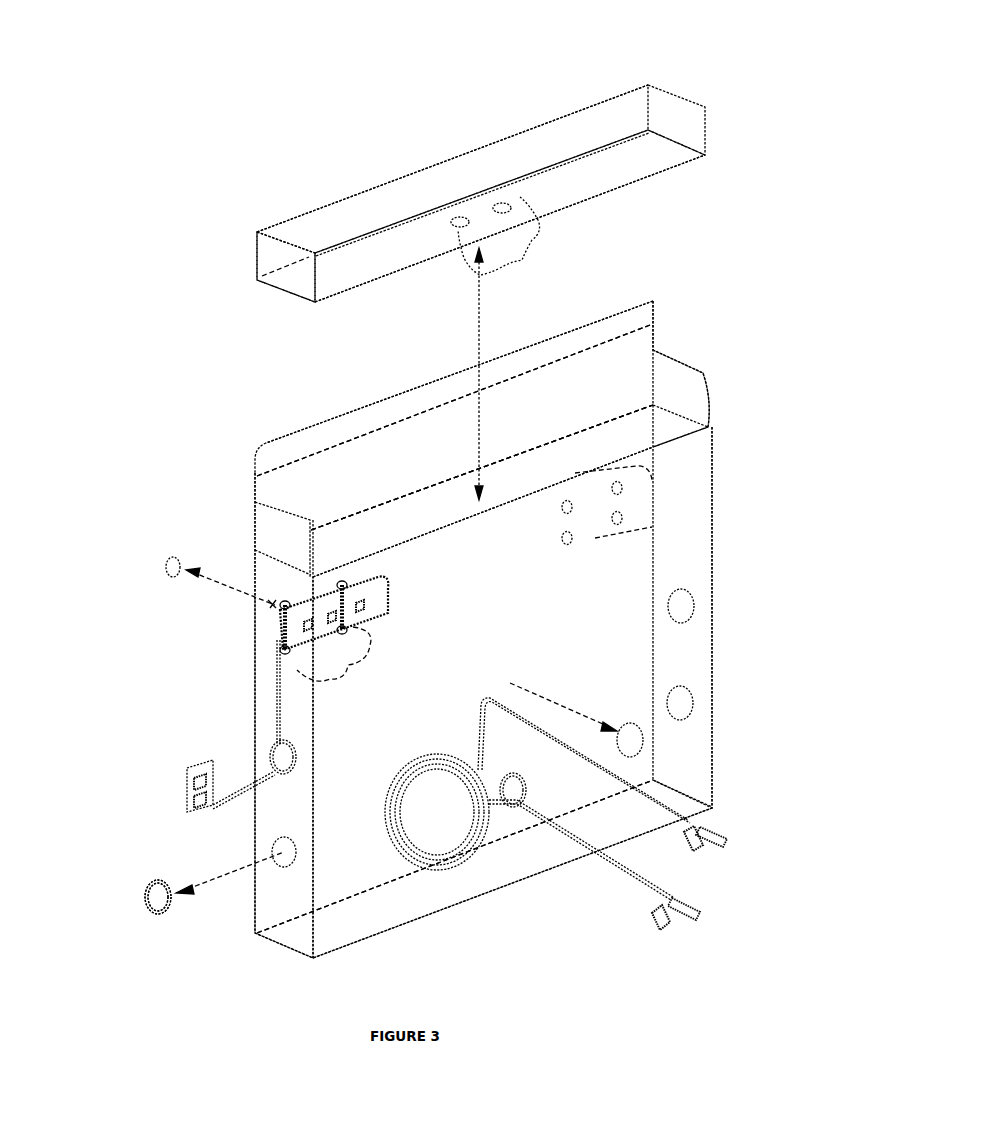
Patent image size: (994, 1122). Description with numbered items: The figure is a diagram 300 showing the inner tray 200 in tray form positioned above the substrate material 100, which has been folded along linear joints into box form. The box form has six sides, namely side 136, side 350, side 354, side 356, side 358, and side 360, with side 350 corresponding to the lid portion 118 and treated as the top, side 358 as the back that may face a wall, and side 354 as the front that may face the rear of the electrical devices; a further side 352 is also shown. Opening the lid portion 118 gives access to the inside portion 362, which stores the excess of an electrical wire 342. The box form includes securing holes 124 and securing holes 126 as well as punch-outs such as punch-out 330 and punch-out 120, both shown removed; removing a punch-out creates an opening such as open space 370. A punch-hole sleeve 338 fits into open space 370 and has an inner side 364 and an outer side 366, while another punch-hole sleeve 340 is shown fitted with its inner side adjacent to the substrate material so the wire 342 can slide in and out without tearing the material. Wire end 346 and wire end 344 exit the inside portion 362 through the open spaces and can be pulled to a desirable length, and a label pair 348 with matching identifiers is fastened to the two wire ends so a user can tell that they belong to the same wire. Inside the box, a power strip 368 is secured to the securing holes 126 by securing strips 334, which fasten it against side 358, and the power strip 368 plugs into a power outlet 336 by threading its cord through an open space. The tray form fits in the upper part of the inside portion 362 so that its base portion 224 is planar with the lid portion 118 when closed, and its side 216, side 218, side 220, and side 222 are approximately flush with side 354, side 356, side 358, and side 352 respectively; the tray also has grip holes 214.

The diagram 300 is at (673, 57).
The inner tray 200 is at (385, 158).
The base portion 224 is at (342, 262).
The side 220 is at (488, 167).
The side 216 is at (378, 247).
The side 218 is at (288, 263).
The side 222 is at (687, 125).
The grip holes 214 is at (541, 241).
The substrate material 100 is at (258, 414).
The lid portion 118 is at (325, 498).
The side 350 is at (605, 372).
The inside portion 362 is at (467, 498).
The side 136 is at (603, 428).
The side 352 is at (712, 442).
The side 358 is at (255, 550).
The side 356 is at (273, 823).
The side 360 is at (370, 935).
The side 354 is at (687, 770).
The open space 370 is at (287, 855).
The securing holes 124 is at (645, 493).
The power strip 368 is at (367, 577).
The securing strips 334 is at (347, 622).
The securing holes 126 is at (358, 675).
The punch-out 330 is at (164, 569).
The power outlet 336 is at (212, 760).
The punch-hole sleeve 338 is at (150, 912).
The inner side 364 is at (146, 899).
The outer side 366 is at (173, 908).
The wire 342 is at (593, 850).
The punch-hole sleeve 340 is at (507, 807).
The punch-out 120 is at (630, 730).
The label pair 348 is at (658, 920).
The wire end 346 is at (709, 840).
The wire end 344 is at (688, 922).